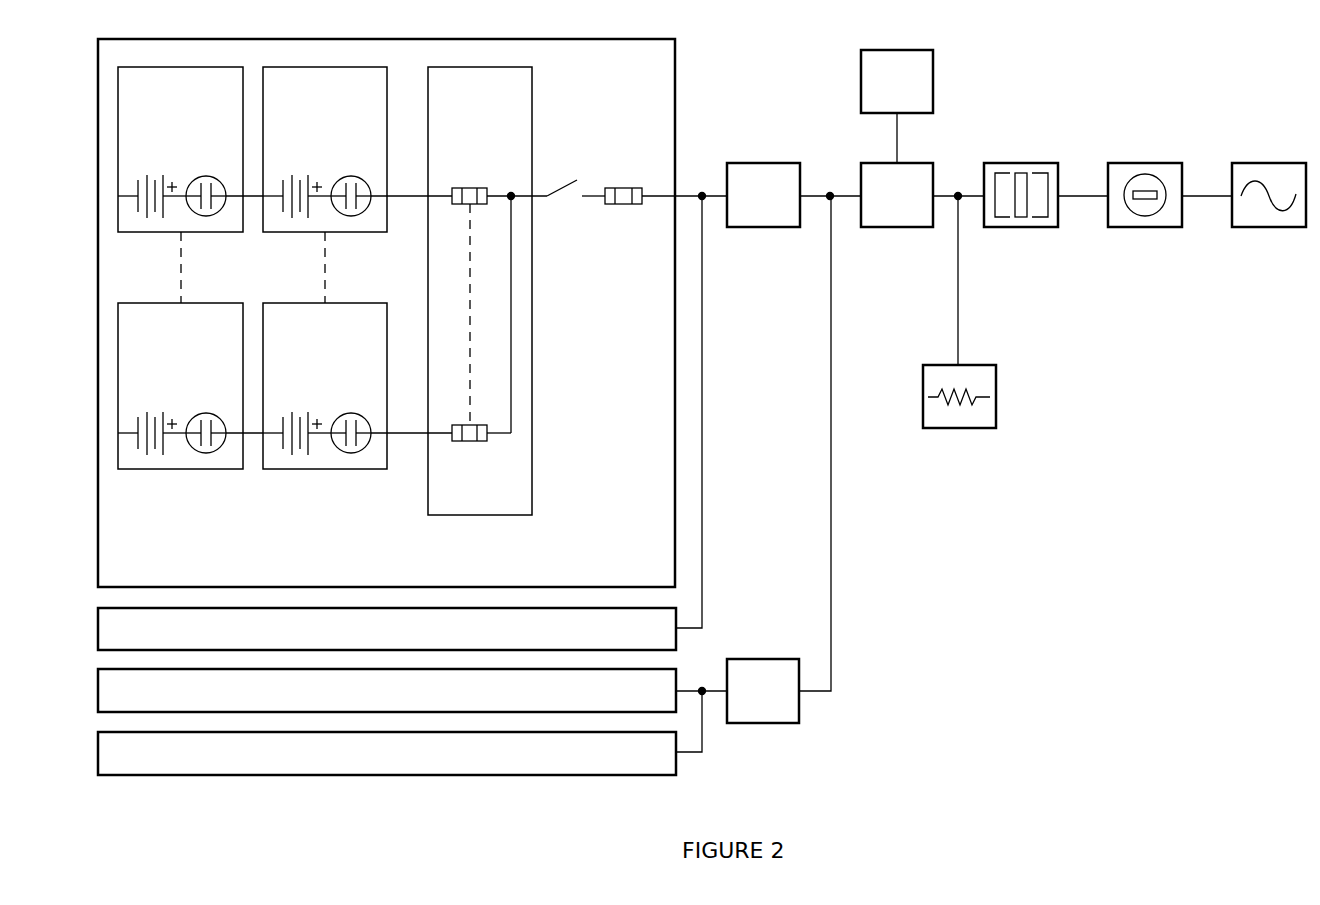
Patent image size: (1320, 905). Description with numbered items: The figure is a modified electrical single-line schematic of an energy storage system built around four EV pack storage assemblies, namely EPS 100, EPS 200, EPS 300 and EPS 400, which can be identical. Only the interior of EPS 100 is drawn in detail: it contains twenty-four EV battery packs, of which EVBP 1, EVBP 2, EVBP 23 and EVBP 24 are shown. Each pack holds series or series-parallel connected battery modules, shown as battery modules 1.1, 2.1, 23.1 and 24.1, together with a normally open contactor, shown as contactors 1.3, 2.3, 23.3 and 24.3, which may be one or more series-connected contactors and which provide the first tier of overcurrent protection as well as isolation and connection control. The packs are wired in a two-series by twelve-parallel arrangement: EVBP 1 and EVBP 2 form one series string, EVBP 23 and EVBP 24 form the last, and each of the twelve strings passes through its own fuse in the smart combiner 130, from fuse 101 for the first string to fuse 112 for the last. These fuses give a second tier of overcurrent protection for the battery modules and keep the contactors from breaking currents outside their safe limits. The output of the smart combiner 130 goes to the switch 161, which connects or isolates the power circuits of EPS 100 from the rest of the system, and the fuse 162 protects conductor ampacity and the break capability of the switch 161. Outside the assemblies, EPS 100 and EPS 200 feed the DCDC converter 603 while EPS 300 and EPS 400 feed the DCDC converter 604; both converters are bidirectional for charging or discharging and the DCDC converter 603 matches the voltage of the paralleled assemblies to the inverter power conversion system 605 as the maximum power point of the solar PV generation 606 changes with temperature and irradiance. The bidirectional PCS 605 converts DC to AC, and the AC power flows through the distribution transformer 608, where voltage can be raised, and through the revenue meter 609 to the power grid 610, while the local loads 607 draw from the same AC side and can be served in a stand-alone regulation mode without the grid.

The EV battery pack 1 is at (151, 96).
The EV battery pack 2 is at (294, 96).
The EV battery pack 23 is at (156, 332).
The EV battery pack 24 is at (301, 332).
The battery modules 1.1 is at (152, 165).
The contactor 1.3 is at (224, 164).
The battery modules 2.1 is at (297, 165).
The contactor 2.3 is at (391, 164).
The battery modules 23.1 is at (152, 402).
The contactor 23.3 is at (224, 401).
The battery modules 24.1 is at (297, 402).
The contactor 24.3 is at (391, 401).
The smart combiner 130 is at (508, 291).
The fuse 101 is at (486, 165).
The fuse 112 is at (487, 467).
The switch 161 is at (580, 161).
The fuse 162 is at (651, 224).
The EV pack storage assembly 100 is at (563, 581).
The EV pack storage assembly 200 is at (563, 641).
The EV pack storage assembly 300 is at (563, 704).
The EV pack storage assembly 400 is at (563, 762).
The DCDC converter 603 is at (762, 225).
The DCDC converter 604 is at (779, 489).
The inverter power conversion system 605 is at (896, 225).
The solar PV generation 606 is at (865, 106).
The local loads 607 is at (959, 342).
The distribution transformer 608 is at (1021, 225).
The revenue meter 609 is at (1145, 225).
The power grid 610 is at (1269, 225).